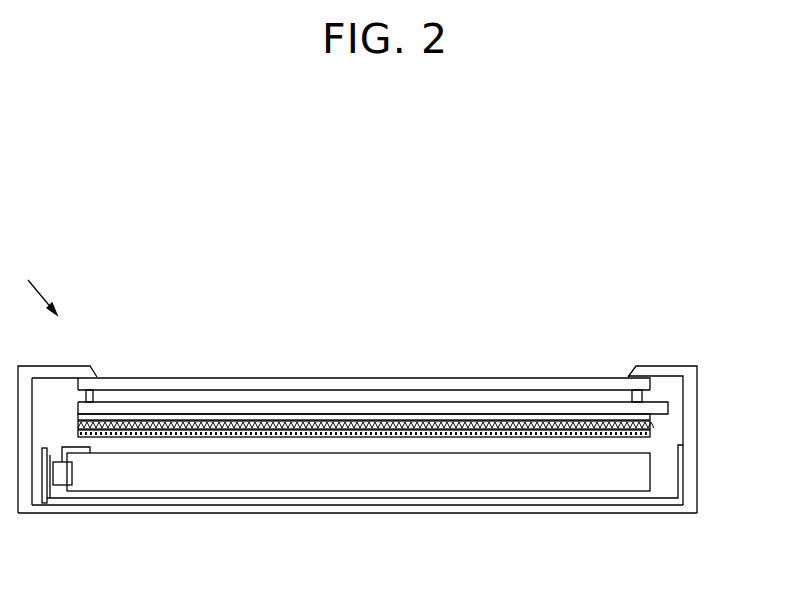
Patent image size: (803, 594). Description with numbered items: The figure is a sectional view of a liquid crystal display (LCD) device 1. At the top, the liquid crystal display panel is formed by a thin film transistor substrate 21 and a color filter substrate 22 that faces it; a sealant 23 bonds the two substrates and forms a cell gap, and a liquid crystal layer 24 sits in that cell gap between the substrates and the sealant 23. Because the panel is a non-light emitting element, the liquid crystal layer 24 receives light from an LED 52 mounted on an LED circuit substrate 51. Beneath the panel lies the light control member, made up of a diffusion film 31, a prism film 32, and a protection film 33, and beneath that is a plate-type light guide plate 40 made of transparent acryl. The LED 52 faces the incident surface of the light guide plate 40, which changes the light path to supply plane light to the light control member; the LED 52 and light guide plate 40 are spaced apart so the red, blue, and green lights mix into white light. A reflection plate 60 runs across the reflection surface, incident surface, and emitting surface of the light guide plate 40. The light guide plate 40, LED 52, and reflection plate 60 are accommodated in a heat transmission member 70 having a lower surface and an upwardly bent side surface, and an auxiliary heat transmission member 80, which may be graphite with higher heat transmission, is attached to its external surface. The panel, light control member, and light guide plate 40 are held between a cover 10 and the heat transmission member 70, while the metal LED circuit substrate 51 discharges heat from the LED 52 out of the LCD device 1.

The liquid crystal display device 1 is at (31, 278).
The cover 10 is at (690, 393).
The thin film transistor substrate 21 is at (428, 407).
The color filter substrate 22 is at (484, 383).
The sealant 23 is at (638, 396).
The liquid crystal layer 24 is at (553, 398).
The diffusion film 31 is at (652, 434).
The prism film 32 is at (652, 426).
The protection film 33 is at (650, 417).
The light guide plate 40 is at (311, 492).
The LED circuit substrate 51 is at (45, 500).
The LED 52 is at (63, 486).
The reflection plate 60 is at (113, 499).
The heat transmission member 70 is at (175, 506).
The auxiliary heat transmission member 80 is at (233, 514).